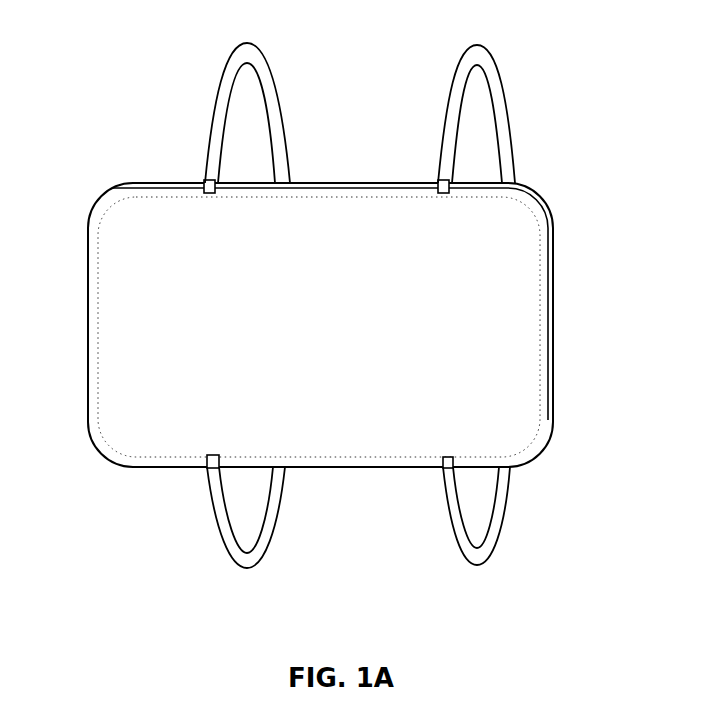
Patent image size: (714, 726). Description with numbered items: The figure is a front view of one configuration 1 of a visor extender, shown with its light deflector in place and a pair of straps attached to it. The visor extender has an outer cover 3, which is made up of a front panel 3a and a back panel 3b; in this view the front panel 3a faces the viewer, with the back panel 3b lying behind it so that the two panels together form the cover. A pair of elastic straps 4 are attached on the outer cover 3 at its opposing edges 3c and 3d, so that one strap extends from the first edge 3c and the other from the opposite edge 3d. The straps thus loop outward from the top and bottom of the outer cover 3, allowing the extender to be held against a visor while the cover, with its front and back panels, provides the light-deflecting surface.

The configuration 1 is at (332, 294).
The outer cover 3 is at (332, 320).
The front panel 3a is at (534, 360).
The back panel 3b is at (557, 412).
The opposing edge 3c is at (196, 190).
The opposing edge 3d is at (200, 465).
The elastic straps 4 is at (222, 90).